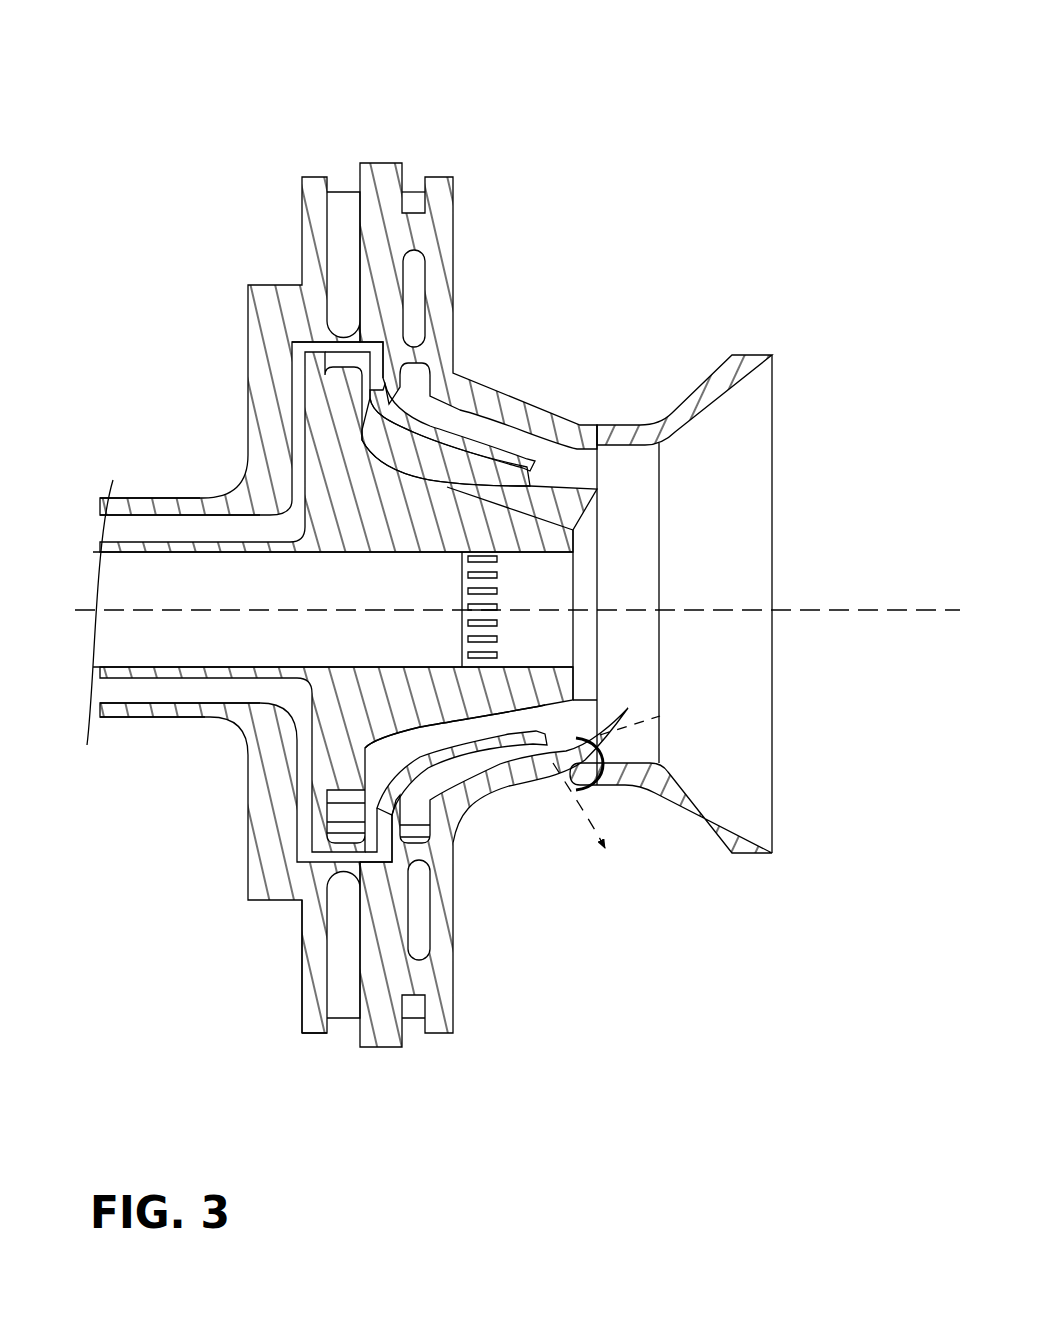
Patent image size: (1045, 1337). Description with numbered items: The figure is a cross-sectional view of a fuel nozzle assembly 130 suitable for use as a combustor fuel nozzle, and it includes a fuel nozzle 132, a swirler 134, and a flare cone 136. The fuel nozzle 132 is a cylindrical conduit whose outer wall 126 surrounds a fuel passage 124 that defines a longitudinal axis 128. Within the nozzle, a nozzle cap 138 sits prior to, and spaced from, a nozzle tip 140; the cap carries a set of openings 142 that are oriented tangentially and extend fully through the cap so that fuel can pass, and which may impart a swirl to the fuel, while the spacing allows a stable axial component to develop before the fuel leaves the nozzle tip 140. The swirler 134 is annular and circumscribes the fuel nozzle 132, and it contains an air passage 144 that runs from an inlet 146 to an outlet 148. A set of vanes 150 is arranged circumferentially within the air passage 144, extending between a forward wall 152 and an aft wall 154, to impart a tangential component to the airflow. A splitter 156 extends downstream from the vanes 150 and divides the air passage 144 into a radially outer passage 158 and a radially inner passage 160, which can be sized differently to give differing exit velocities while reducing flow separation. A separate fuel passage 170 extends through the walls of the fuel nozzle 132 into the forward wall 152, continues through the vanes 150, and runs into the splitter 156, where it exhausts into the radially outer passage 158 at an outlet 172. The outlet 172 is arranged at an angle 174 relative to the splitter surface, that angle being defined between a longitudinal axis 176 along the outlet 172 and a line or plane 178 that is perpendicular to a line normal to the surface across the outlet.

The fuel passage 124 is at (177, 642).
The outer wall 126 is at (118, 550).
The longitudinal axis 128 is at (797, 612).
The fuel nozzle assembly 130 is at (740, 68).
The fuel nozzle 132 is at (131, 627).
The swirler 134 is at (298, 232).
The flare cone 136 is at (710, 368).
The nozzle cap 138 is at (462, 614).
The nozzle tip 140 is at (573, 537).
The openings 142 is at (499, 584).
The air passage 144 is at (420, 466).
The inlet 146 is at (400, 155).
The outlet 148 is at (599, 507).
The vanes 150 is at (350, 907).
The forward wall 152 is at (313, 1008).
The aft wall 154 is at (438, 1010).
The splitter 156 is at (472, 445).
The radially outer passage 158 is at (504, 776).
The radially inner passage 160 is at (423, 741).
The fuel passage 170 is at (297, 387).
The outlet 172 is at (541, 456).
The angle 174 is at (596, 788).
The longitudinal axis 176 is at (605, 850).
The line or plane 178 is at (615, 731).